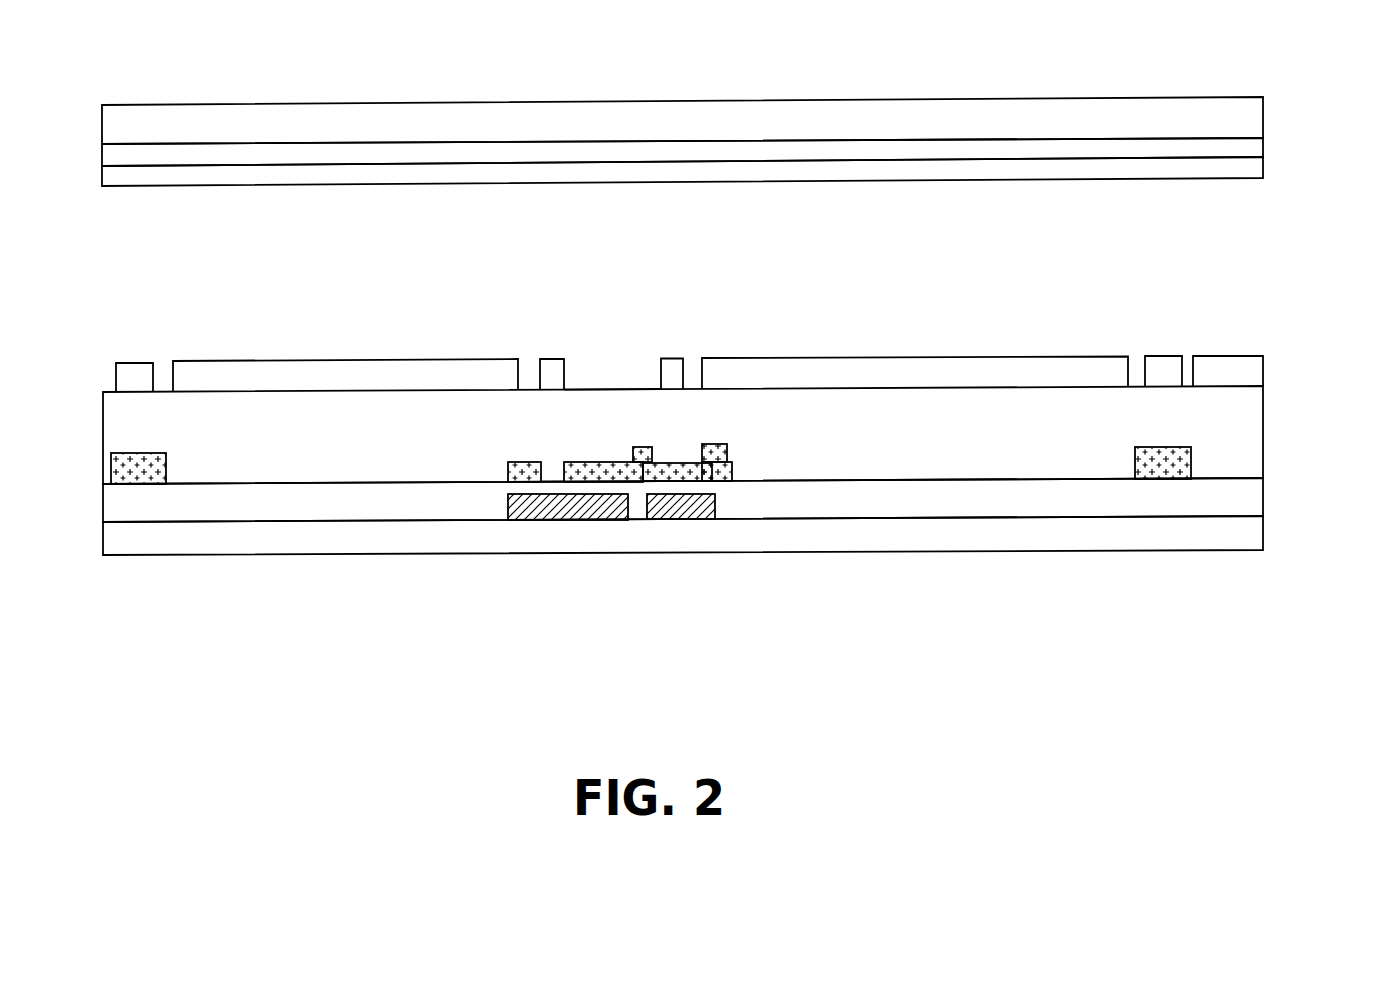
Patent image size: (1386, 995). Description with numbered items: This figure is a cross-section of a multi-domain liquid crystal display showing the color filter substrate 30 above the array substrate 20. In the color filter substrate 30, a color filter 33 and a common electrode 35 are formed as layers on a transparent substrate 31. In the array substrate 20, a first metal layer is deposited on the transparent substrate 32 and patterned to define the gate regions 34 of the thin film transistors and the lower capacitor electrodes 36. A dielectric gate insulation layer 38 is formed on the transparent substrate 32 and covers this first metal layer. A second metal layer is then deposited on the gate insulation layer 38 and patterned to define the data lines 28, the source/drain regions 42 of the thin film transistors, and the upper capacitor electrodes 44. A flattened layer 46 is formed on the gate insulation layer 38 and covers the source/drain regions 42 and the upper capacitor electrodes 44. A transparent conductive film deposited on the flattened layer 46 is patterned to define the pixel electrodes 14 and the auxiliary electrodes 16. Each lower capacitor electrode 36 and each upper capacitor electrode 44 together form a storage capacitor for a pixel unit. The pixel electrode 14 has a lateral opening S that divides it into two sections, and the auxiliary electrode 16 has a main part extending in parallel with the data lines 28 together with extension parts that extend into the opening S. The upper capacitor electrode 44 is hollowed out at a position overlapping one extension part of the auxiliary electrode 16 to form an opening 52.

The color filter substrate 30 is at (734, 100).
The transparent substrate 31 is at (347, 130).
The color filter 33 is at (795, 147).
The common electrode 35 is at (915, 168).
The array substrate 20 is at (716, 454).
The transparent substrate 32 is at (377, 545).
The gate insulation layer 38 is at (310, 503).
The flattened layer 46 is at (263, 457).
The lower capacitor electrode 36 is at (555, 518).
The gate region 34 is at (693, 518).
The upper capacitor electrode 44 is at (510, 472).
The source/drain region 42 is at (715, 457).
The opening 52 is at (553, 468).
The data line 28 is at (1133, 452).
The auxiliary electrode 16 is at (137, 368).
The pixel electrode 14 is at (333, 372).
The opening S is at (612, 367).